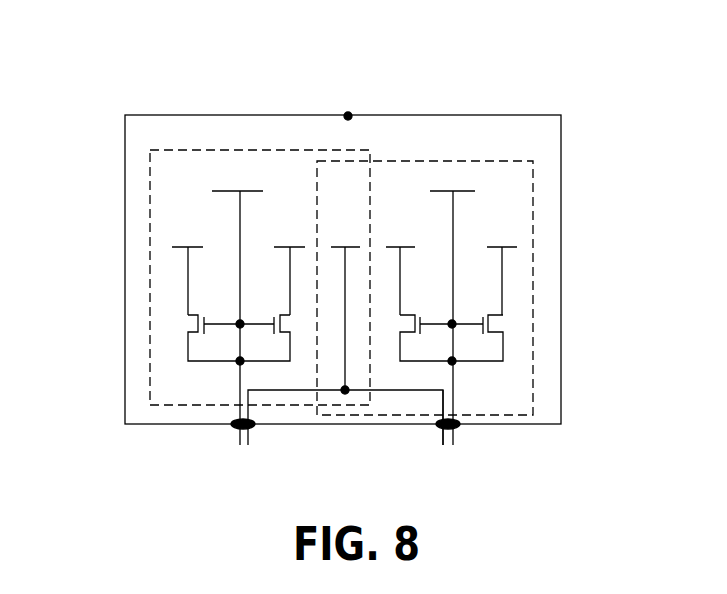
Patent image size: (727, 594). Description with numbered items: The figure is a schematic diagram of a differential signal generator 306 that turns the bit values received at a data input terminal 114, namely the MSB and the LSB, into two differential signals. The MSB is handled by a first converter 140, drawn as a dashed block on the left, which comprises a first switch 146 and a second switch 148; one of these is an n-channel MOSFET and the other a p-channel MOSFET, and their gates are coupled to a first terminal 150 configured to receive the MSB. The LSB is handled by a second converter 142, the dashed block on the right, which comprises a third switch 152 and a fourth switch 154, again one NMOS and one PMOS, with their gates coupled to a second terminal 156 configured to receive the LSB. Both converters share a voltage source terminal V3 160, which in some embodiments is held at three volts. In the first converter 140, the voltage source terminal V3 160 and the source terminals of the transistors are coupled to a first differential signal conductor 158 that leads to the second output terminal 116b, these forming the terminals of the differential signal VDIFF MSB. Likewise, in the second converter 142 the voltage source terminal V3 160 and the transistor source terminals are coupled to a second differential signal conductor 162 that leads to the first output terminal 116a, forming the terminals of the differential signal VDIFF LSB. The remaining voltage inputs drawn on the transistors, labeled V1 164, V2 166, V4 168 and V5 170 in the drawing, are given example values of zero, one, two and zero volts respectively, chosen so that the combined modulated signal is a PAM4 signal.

The differential signal generator 306 is at (152, 50).
The data input terminal 114 is at (348, 116).
The first converter 140 is at (150, 185).
The second converter 142 is at (533, 182).
The first terminal 150 is at (228, 192).
The second terminal 156 is at (473, 193).
The voltage input V1 164 is at (183, 247).
The voltage input V2 166 is at (282, 247).
The voltage source terminal V3 160 is at (350, 225).
The voltage input V4 168 is at (407, 248).
The voltage input V5 170 is at (510, 248).
The first switch 146 is at (198, 315).
The second switch 148 is at (274, 328).
The third switch 152 is at (418, 330).
The fourth switch 154 is at (490, 318).
The first differential signal conductor 158 is at (240, 418).
The second differential signal conductor 162 is at (455, 416).
The second output terminal 116b is at (232, 428).
The first output terminal 116a is at (462, 430).